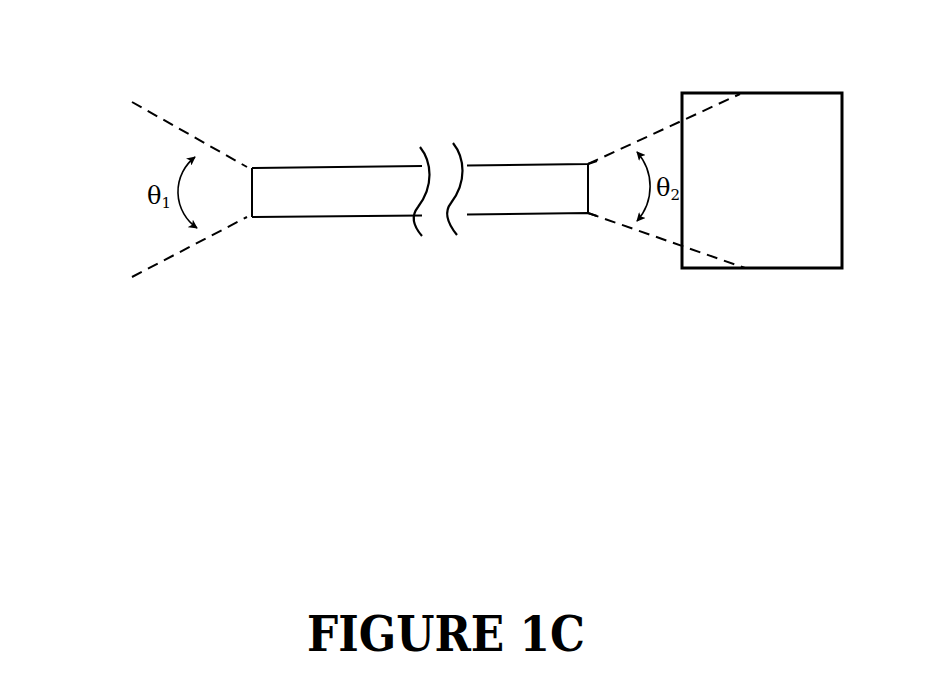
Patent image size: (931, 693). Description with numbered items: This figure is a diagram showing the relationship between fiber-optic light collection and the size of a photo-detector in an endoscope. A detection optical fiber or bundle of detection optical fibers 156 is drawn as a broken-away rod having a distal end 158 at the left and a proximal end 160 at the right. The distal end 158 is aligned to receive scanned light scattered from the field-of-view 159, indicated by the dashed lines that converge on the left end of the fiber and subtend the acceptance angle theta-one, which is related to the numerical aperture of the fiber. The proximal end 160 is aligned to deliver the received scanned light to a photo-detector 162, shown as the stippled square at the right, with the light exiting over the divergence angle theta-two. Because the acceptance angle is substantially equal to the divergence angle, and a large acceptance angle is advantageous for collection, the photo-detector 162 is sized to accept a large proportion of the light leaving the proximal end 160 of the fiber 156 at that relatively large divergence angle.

The detection optical fiber 156 is at (578, 313).
The distal end 158 is at (323, 217).
The proximal end 160 is at (541, 164).
The field-of-view 159 is at (42, 288).
The photo-detector 162 is at (765, 92).